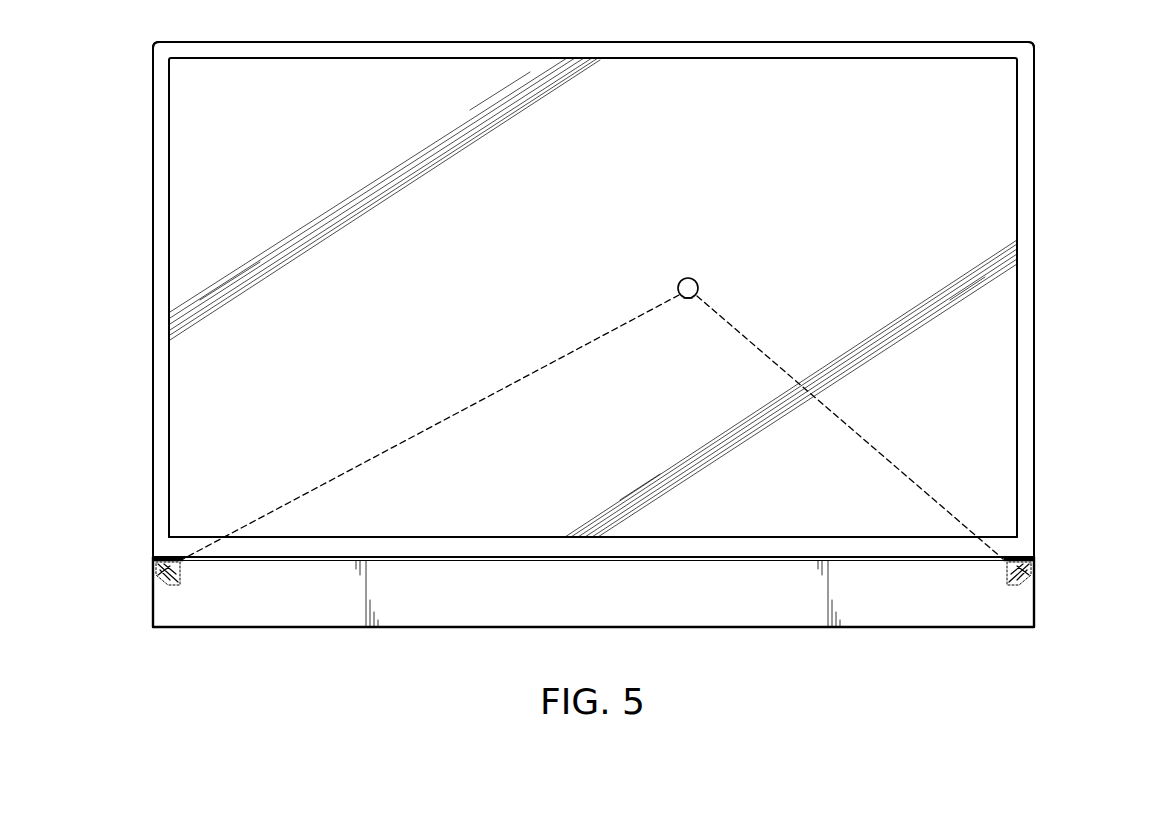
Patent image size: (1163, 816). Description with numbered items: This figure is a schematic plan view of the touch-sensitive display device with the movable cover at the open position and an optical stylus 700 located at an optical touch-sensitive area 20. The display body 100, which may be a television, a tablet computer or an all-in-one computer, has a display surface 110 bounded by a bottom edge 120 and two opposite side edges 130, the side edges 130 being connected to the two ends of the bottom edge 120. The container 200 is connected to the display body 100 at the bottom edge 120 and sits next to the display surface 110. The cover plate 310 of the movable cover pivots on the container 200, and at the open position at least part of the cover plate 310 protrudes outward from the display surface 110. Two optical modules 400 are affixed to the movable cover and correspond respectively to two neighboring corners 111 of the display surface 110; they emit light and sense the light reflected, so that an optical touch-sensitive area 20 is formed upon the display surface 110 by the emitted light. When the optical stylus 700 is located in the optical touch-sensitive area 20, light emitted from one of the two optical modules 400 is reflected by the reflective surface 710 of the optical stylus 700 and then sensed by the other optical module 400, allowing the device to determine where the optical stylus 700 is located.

The display body 100 is at (1056, 220).
The display surface 110 is at (850, 195).
The side edge 130 is at (1035, 317).
The optical touch-sensitive area 20 is at (932, 368).
The corner 111 is at (170, 537).
The bottom edge 120 is at (750, 557).
The container 200 is at (1035, 600).
The cover plate 310 is at (886, 595).
The optical module 400 is at (153, 583).
The optical stylus 700 is at (688, 278).
The reflective surface 710 is at (688, 299).